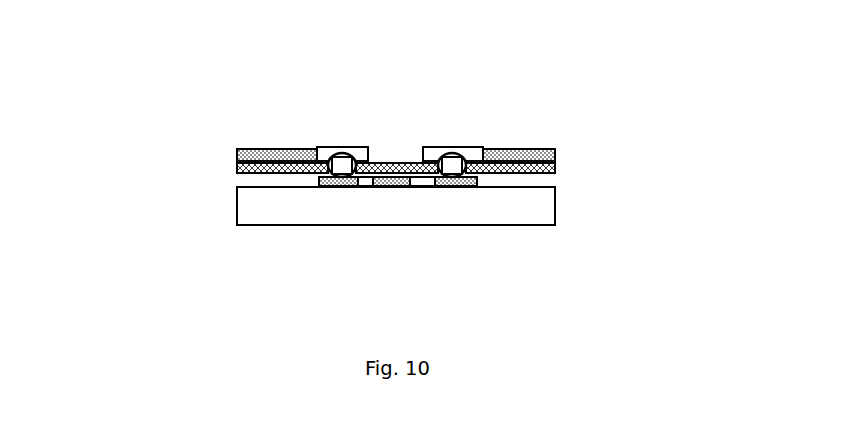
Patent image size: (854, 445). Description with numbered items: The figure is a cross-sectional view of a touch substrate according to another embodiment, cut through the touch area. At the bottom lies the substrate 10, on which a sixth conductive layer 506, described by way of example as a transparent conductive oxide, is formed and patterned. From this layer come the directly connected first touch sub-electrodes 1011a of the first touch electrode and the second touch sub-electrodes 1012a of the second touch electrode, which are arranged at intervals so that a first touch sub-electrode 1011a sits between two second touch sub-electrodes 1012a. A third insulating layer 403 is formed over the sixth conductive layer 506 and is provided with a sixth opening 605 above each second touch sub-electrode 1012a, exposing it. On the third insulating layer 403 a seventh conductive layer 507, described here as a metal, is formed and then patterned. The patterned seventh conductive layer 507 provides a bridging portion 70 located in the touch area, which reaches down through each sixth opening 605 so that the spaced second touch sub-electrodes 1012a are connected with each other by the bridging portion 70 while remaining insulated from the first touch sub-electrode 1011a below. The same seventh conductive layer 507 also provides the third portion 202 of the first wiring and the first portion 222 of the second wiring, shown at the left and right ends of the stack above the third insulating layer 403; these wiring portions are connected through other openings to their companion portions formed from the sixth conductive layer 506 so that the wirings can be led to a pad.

The substrate 10 is at (236, 205).
The third portion of the first wiring 202 is at (236, 152).
The first portion of the second wiring 222 is at (413, 153).
The seventh conductive layer 507 is at (413, 153).
The third insulating layer 403 is at (236, 170).
The bridging portion 70 is at (360, 147).
The sixth opening 605 is at (339, 157).
The second touch sub-electrodes 1012a is at (329, 187).
The sixth conductive layer 506 is at (470, 187).
The first touch sub-electrodes 1011a is at (390, 187).